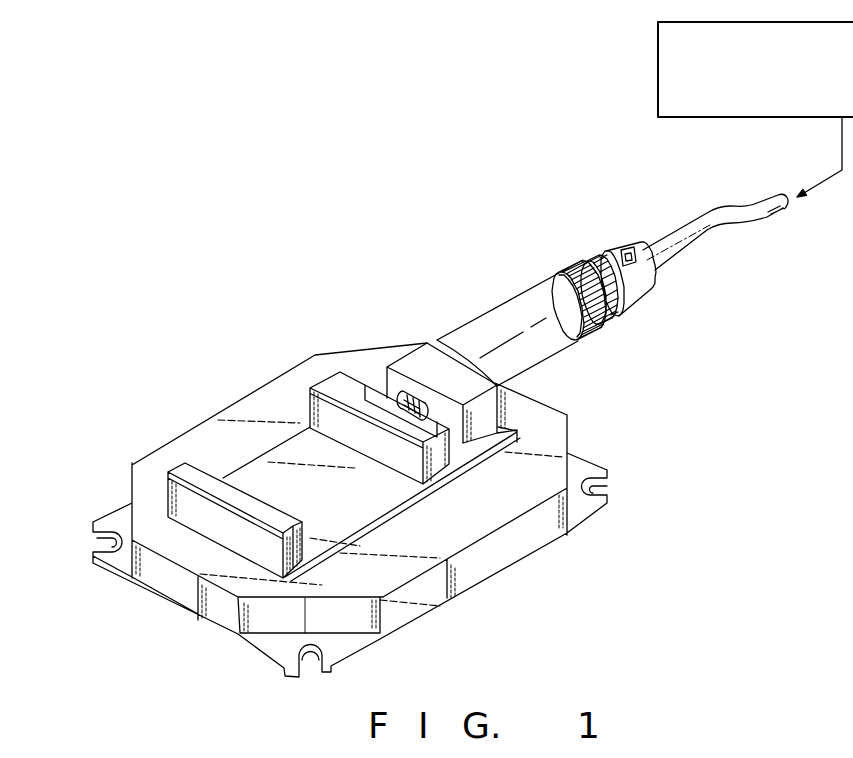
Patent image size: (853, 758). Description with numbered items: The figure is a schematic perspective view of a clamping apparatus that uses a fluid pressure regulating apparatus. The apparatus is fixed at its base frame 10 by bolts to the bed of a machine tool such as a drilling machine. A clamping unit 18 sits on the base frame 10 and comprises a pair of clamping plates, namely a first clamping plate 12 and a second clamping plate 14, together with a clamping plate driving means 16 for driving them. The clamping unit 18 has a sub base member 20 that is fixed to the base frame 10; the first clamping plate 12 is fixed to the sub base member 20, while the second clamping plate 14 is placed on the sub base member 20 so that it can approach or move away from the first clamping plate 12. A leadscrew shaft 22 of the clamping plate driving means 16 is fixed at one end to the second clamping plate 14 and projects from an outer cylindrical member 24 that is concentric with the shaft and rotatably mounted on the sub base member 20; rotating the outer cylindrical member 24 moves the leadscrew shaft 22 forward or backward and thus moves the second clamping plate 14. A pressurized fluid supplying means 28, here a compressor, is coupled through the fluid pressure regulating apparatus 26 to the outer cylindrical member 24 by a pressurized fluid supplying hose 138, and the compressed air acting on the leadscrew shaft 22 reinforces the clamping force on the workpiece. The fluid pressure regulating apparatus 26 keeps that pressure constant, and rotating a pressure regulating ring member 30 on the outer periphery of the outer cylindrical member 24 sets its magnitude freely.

The base frame 10 is at (420, 603).
The first clamping plate 12 is at (190, 462).
The second clamping plate 14 is at (312, 388).
The clamping plate driving means 16 is at (525, 289).
The clamping unit 18 is at (512, 423).
The sub base member 20 is at (342, 430).
The leadscrew shaft 22 is at (402, 398).
The outer cylindrical member 24 is at (488, 313).
The fluid pressure regulating apparatus 26 is at (663, 296).
The pressurized fluid supplying means 28 is at (658, 52).
The pressure regulating ring member 30 is at (599, 258).
The pressurized fluid supplying hose 138 is at (687, 224).